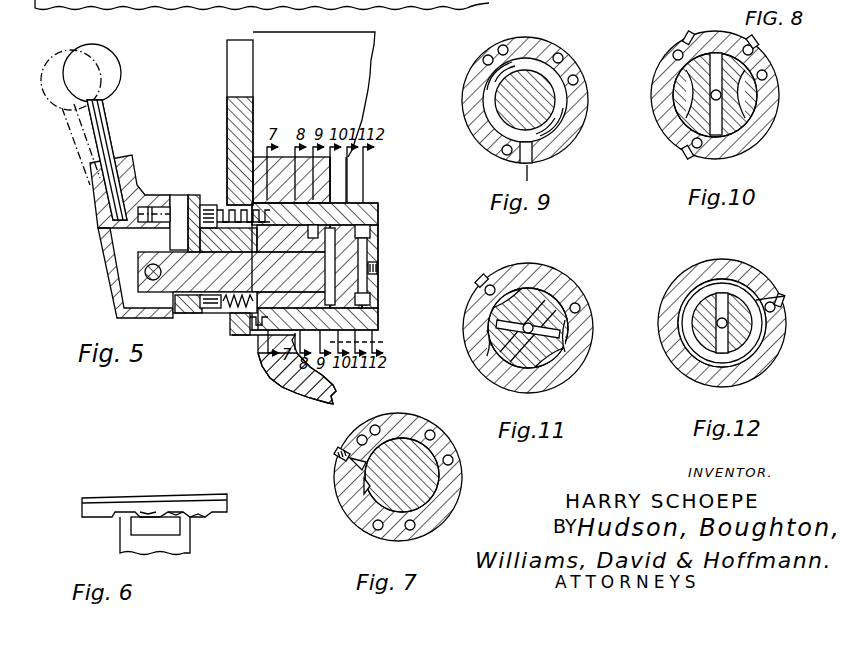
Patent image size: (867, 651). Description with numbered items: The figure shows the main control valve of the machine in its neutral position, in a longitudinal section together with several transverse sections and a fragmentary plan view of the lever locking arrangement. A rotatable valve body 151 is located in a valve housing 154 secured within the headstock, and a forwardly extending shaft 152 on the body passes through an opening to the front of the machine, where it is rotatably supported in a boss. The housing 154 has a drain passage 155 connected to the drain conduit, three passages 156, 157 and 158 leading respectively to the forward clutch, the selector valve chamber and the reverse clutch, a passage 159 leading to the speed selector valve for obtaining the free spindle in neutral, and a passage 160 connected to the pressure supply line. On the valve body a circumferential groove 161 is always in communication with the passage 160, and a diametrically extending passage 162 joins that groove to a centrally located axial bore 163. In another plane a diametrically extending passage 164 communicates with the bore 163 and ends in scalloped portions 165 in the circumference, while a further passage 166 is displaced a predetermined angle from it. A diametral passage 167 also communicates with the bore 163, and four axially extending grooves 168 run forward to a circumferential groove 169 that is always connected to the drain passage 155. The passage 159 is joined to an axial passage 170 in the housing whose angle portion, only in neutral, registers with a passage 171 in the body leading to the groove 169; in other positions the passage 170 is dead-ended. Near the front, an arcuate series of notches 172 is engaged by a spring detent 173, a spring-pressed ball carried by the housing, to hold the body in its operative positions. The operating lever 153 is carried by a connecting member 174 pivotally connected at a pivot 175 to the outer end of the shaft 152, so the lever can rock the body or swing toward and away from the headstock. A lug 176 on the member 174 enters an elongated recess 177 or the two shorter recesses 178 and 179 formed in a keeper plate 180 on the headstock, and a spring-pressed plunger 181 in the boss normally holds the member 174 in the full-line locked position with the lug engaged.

In FIG. 5, the rotatable valve body 151 is at (312, 262).
In FIG. 7, the rotatable valve body 151 is at (460, 480).
In FIG. 9, the rotatable valve body 151 is at (500, 100).
In FIG. 12, the rotatable valve body 151 is at (700, 322).
In FIG. 5, the forwardly extending shaft 152 is at (228, 270).
In FIG. 5, the operating lever 153 is at (110, 136).
In FIG. 5, the valve housing 154 is at (378, 214).
In FIG. 7, the valve housing 154 is at (455, 502).
In FIG. 9, the valve housing 154 is at (542, 42).
In FIG. 11, the valve housing 154 is at (580, 298).
In FIG. 12, the valve housing 154 is at (765, 355).
In FIG. 5, the drain passage 155 is at (326, 281).
In FIG. 9, the drain passage 155 is at (535, 158).
In FIG. 10, the passage 156 is at (684, 40).
In FIG. 10, the passage 157 is at (683, 152).
In FIG. 10, the passage 158 is at (760, 46).
In FIG. 5, the passage 159 is at (378, 316).
In FIG. 11, the passage 159 is at (510, 270).
In FIG. 12, the pressure passage 160 is at (773, 300).
In FIG. 5, the circumferential groove 161 is at (372, 235).
In FIG. 12, the circumferential groove 161 is at (696, 350).
In FIG. 5, the diametrically extending passage 162 is at (340, 295).
In FIG. 12, the diametrically extending passage 162 is at (705, 360).
In FIG. 5, the axial bore 163 is at (345, 272).
In FIG. 10, the axial bore 163 is at (712, 96).
In FIG. 11, the axial bore 163 is at (506, 368).
In FIG. 12, the axial bore 163 is at (724, 318).
In FIG. 5, the diametrically extending passage 164 is at (340, 252).
In FIG. 11, the diametrically extending passage 164 is at (548, 300).
In FIG. 5, the scalloped portions 165 is at (372, 196).
In FIG. 11, the scalloped portions 165 is at (490, 350).
In FIG. 11, the diametrically extending passage 166 is at (540, 292).
In FIG. 10, the diametral passage 167 is at (720, 128).
In FIG. 5, the axially extending grooves 168 is at (278, 270).
In FIG. 9, the axially extending grooves 168 is at (560, 118).
In FIG. 10, the axially extending grooves 168 is at (745, 118).
In FIG. 5, the circumferential groove 169 is at (308, 236).
In FIG. 9, the circumferential groove 169 is at (568, 56).
In FIG. 5, the axial passage 170 is at (372, 342).
In FIG. 11, the axial passage 170 is at (494, 288).
In FIG. 5, the passage 171 is at (294, 296).
In FIG. 7, the notches 172 is at (366, 490).
In FIG. 7, the spring detent 173 is at (352, 466).
In FIG. 5, the connecting member 174 is at (100, 228).
In FIG. 5, the pivot 175 is at (145, 276).
In FIG. 5, the lug 176 is at (190, 196).
In FIG. 6, the lug 176 is at (170, 508).
In FIG. 6, the elongated recess 177 is at (150, 507).
In FIG. 6, the recess 178 is at (205, 508).
In FIG. 6, the recess 179 is at (120, 498).
In FIG. 5, the keeper plate 180 is at (200, 208).
In FIG. 5, the spring-pressed plunger 181 is at (210, 315).